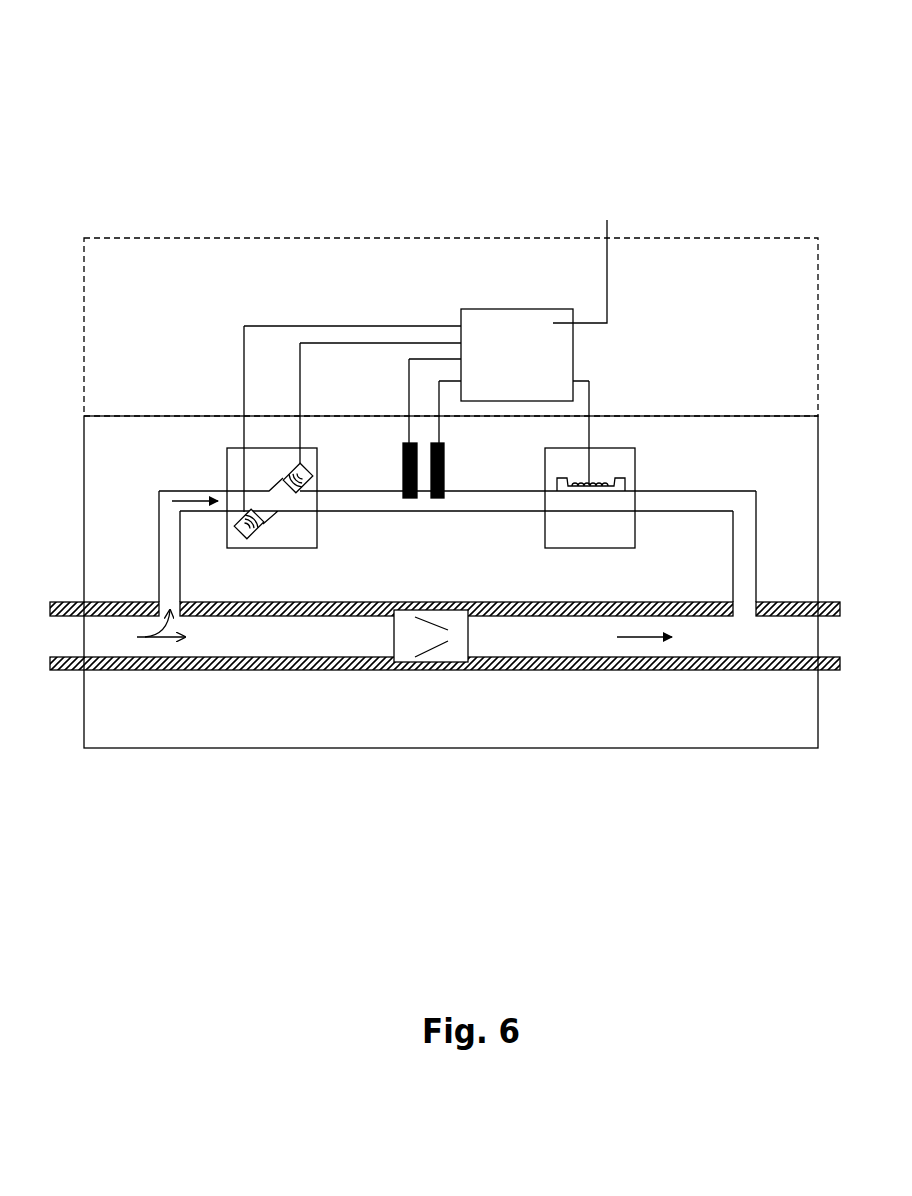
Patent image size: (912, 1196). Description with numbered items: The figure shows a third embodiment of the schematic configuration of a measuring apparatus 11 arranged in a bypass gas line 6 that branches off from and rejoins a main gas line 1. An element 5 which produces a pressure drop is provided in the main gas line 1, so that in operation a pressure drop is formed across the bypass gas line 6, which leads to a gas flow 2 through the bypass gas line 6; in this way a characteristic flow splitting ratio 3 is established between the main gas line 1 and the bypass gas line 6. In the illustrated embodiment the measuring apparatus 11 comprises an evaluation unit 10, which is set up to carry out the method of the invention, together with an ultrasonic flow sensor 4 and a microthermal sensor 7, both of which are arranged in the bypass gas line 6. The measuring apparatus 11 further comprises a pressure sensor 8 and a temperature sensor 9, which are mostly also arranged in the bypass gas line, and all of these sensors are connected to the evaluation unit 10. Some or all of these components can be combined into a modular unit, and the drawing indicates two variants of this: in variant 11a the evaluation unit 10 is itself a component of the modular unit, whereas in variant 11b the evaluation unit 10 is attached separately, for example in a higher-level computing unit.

The main gas line 1 is at (580, 632).
The gas flow 2 is at (170, 565).
The flow splitting ratio 3 is at (160, 632).
The ultrasonic flow sensor 4 is at (293, 527).
The element which produces a pressure drop 5 is at (403, 625).
The bypass gas line 6 is at (479, 511).
The microthermal sensor 7 is at (617, 527).
The pressure sensor 8 is at (403, 453).
The temperature sensor 9 is at (444, 453).
The evaluation unit 10 is at (496, 330).
The measuring apparatus 11 is at (704, 110).
The variant with integrated evaluation unit 11a is at (728, 238).
The variant with separately attached evaluation unit 11b is at (728, 416).